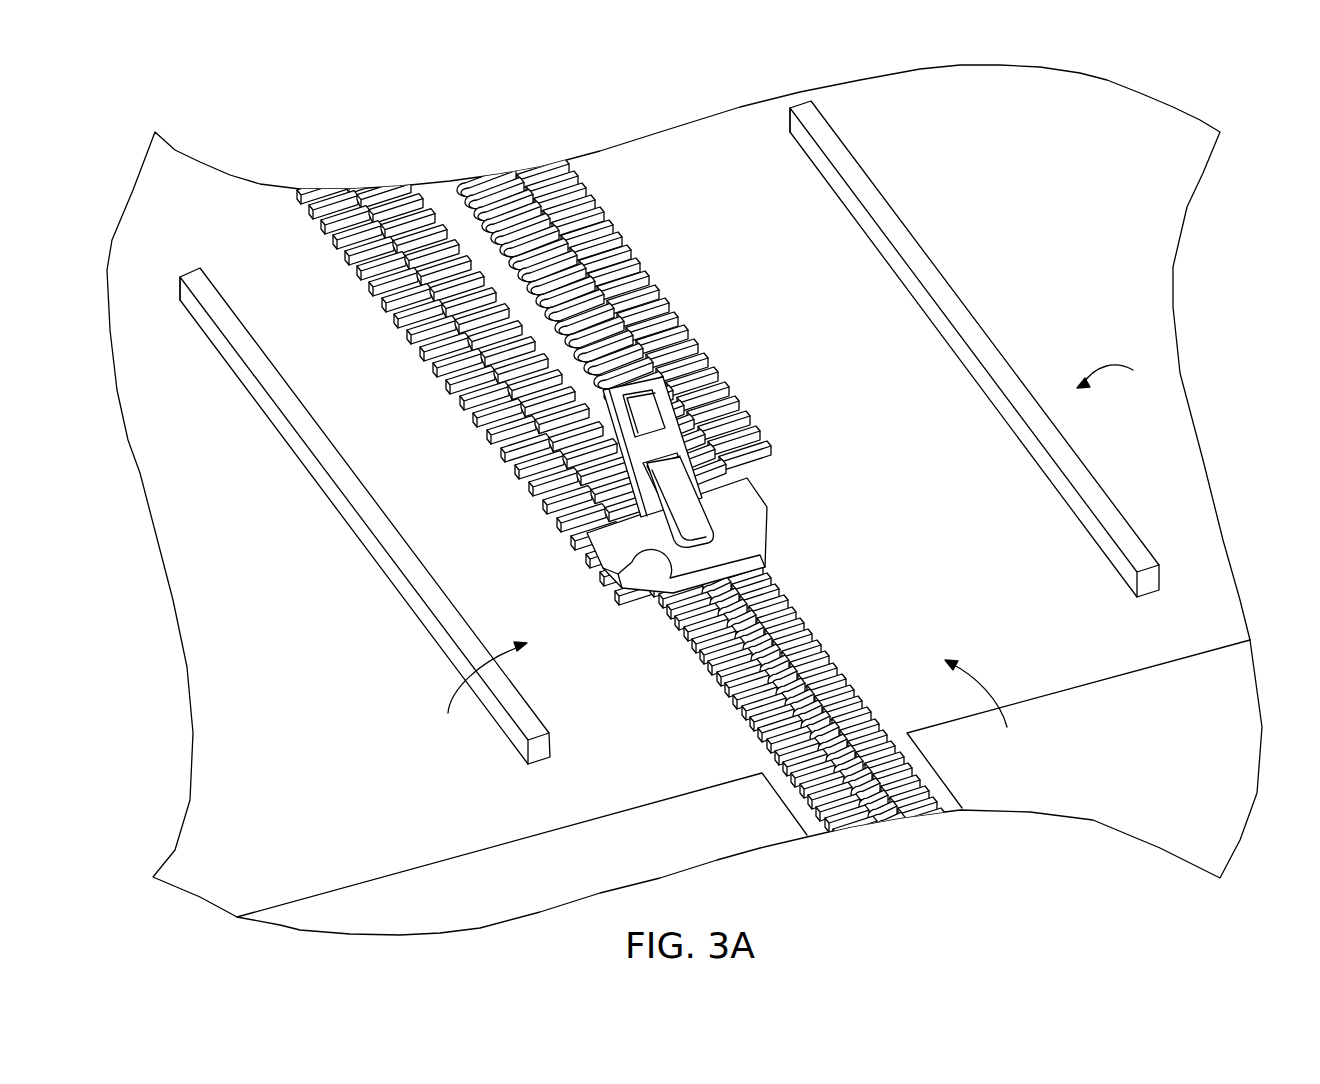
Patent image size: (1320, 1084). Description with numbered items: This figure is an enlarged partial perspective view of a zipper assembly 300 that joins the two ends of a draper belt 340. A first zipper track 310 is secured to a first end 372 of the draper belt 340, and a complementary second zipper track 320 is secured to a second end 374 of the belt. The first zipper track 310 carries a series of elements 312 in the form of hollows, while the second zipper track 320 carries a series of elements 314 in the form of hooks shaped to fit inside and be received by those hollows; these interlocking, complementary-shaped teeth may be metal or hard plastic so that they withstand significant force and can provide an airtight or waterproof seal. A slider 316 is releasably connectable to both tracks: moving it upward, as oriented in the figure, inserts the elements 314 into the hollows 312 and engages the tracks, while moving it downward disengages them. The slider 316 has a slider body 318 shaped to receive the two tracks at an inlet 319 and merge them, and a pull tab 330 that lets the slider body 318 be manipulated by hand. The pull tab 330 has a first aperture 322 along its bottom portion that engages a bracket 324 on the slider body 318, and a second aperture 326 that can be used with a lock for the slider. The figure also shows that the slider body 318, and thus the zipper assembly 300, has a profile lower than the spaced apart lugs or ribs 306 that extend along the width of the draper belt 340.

The zipper assembly 300 is at (1240, 115).
The lugs or ribs 306 is at (250, 350).
The first zipper track 310 is at (599, 475).
The elements in the form of a hollow 312 is at (560, 263).
The elements in the form of a hook 314 is at (511, 369).
The slider 316 is at (719, 457).
The slider body 318 is at (672, 560).
The inlet 319 is at (502, 390).
The second zipper track 320 is at (317, 208).
The first aperture 322 is at (502, 453).
The bracket 324 is at (703, 515).
The second aperture 326 is at (665, 385).
The pull tab 330 is at (700, 413).
The draper belt 340 is at (1121, 374).
The first end of the draper belt 372 is at (983, 711).
The second end of the draper belt 374 is at (481, 695).